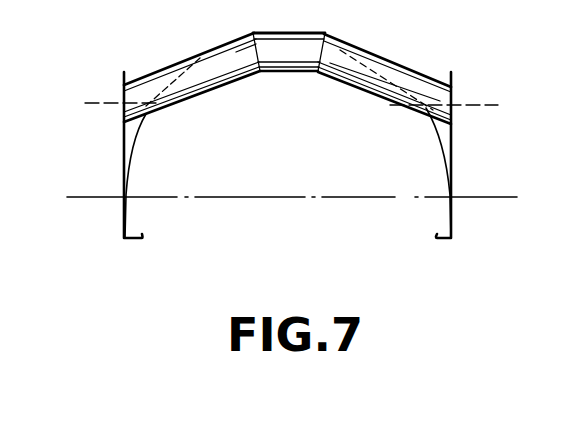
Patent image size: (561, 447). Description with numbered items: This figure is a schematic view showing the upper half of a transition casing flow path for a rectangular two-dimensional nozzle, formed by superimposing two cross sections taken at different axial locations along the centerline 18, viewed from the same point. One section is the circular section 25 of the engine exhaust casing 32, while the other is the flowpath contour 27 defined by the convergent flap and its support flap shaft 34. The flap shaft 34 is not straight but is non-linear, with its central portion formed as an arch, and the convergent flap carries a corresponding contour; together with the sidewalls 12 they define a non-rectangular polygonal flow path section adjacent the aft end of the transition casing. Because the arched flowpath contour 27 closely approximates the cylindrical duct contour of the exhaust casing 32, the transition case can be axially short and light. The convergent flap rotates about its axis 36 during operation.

The sidewalls 12 is at (122, 154).
The centerline 18 is at (103, 200).
The section 25 is at (432, 132).
The flowpath contour 27 is at (428, 121).
The exhaust casing 32 is at (136, 150).
The flap shaft 34 is at (369, 52).
The axis 36 is at (470, 108).